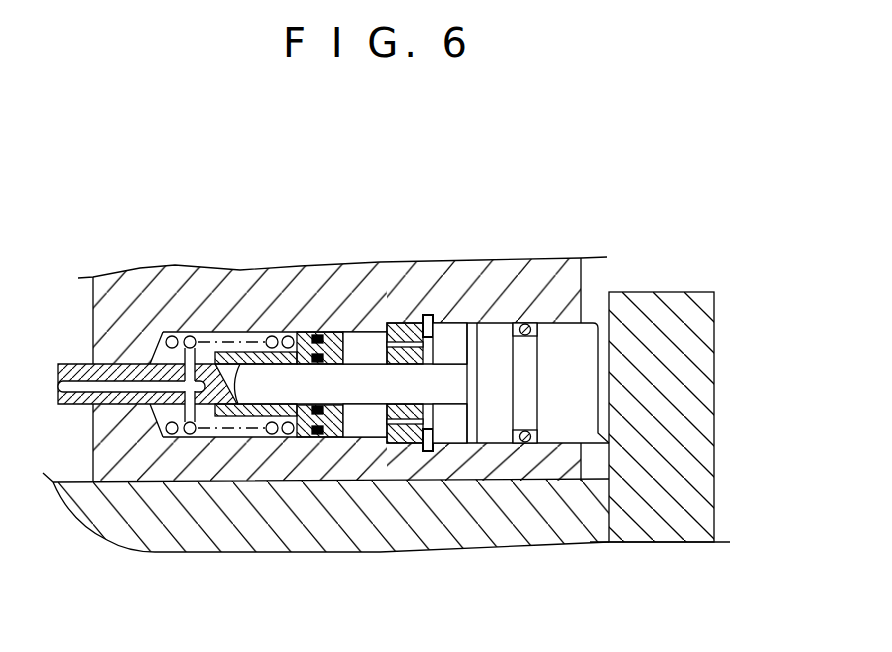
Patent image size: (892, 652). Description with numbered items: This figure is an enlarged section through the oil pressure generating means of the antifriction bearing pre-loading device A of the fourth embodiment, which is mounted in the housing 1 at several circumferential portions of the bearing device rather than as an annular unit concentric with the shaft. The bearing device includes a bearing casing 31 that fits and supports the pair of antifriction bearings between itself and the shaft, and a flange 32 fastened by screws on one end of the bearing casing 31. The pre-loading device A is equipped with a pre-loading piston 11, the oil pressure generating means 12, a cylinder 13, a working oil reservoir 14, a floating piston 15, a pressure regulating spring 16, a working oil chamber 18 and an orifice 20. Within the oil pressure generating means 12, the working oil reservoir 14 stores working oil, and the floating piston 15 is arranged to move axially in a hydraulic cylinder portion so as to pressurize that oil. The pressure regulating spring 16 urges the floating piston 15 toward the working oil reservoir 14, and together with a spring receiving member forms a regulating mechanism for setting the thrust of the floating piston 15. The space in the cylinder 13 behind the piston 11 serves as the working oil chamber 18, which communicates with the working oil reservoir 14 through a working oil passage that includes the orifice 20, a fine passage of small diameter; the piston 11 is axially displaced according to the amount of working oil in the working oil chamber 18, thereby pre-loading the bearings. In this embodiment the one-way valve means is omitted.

The housing 1 is at (93, 316).
The pre-loading piston 11 is at (598, 322).
The oil pressure generating means 12 is at (263, 333).
The pre-loading cylinder 13 is at (503, 321).
The working oil reservoir 14 is at (363, 348).
The floating piston 15 is at (305, 331).
The pressure regulating spring 16 is at (191, 335).
The working oil chamber 18 is at (450, 338).
The orifice 20 is at (408, 337).
The bearing casing 31 is at (335, 527).
The flange 32 is at (714, 331).
The antifriction bearing pre-loading device A is at (448, 453).